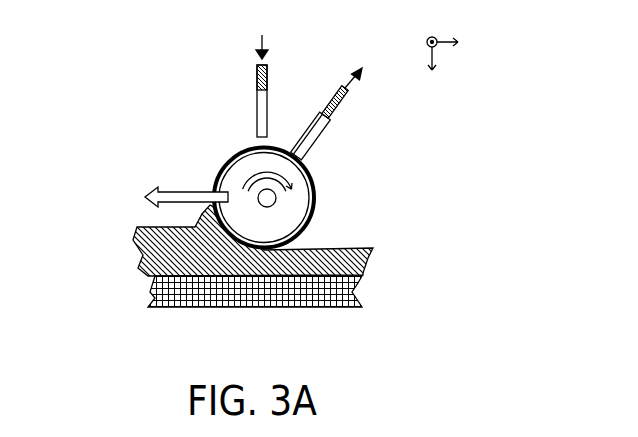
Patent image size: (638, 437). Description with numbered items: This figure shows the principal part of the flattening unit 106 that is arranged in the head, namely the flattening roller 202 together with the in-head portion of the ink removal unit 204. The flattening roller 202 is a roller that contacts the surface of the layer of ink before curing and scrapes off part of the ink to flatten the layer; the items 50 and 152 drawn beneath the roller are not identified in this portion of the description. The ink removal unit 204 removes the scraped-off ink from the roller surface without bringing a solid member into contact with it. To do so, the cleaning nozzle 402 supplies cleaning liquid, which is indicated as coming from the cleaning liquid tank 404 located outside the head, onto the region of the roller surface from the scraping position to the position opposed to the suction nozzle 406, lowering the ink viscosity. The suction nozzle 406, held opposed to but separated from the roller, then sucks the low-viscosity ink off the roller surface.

The workpiece 50 is at (102, 257).
The workpiece layer 152 is at (370, 268).
The flattening unit 106 is at (127, 110).
The flattening roller 202 is at (303, 212).
The ink removal unit 204 is at (360, 149).
The cleaning nozzle 402 is at (257, 110).
The cleaning liquid tank 404 is at (260, 39).
The suction nozzle 406 is at (338, 125).